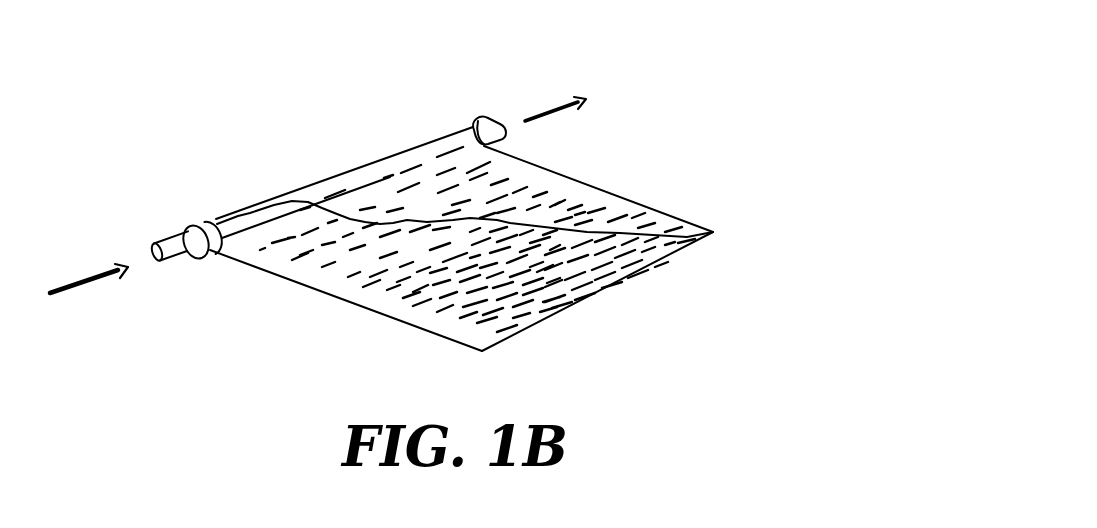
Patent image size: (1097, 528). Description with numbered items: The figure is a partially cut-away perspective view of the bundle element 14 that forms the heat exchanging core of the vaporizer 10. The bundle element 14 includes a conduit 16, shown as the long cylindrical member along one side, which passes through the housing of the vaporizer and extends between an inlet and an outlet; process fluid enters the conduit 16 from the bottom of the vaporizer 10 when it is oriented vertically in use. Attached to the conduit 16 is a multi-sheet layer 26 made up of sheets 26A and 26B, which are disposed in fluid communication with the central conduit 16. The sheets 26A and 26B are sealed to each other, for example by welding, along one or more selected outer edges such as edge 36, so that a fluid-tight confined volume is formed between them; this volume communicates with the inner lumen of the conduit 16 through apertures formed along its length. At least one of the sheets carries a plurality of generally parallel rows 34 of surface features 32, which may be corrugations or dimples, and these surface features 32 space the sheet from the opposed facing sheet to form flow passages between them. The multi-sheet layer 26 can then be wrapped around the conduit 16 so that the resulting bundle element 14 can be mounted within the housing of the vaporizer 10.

The vaporizer 10 is at (670, 68).
The bundle element 14 is at (333, 149).
The conduit 16 is at (164, 258).
The multi-sheet layer 26 is at (660, 273).
The sheet 26A is at (358, 306).
The sheet 26B is at (649, 218).
The surface features 32 is at (425, 304).
The rows 34 is at (512, 322).
The edge 36 is at (560, 174).